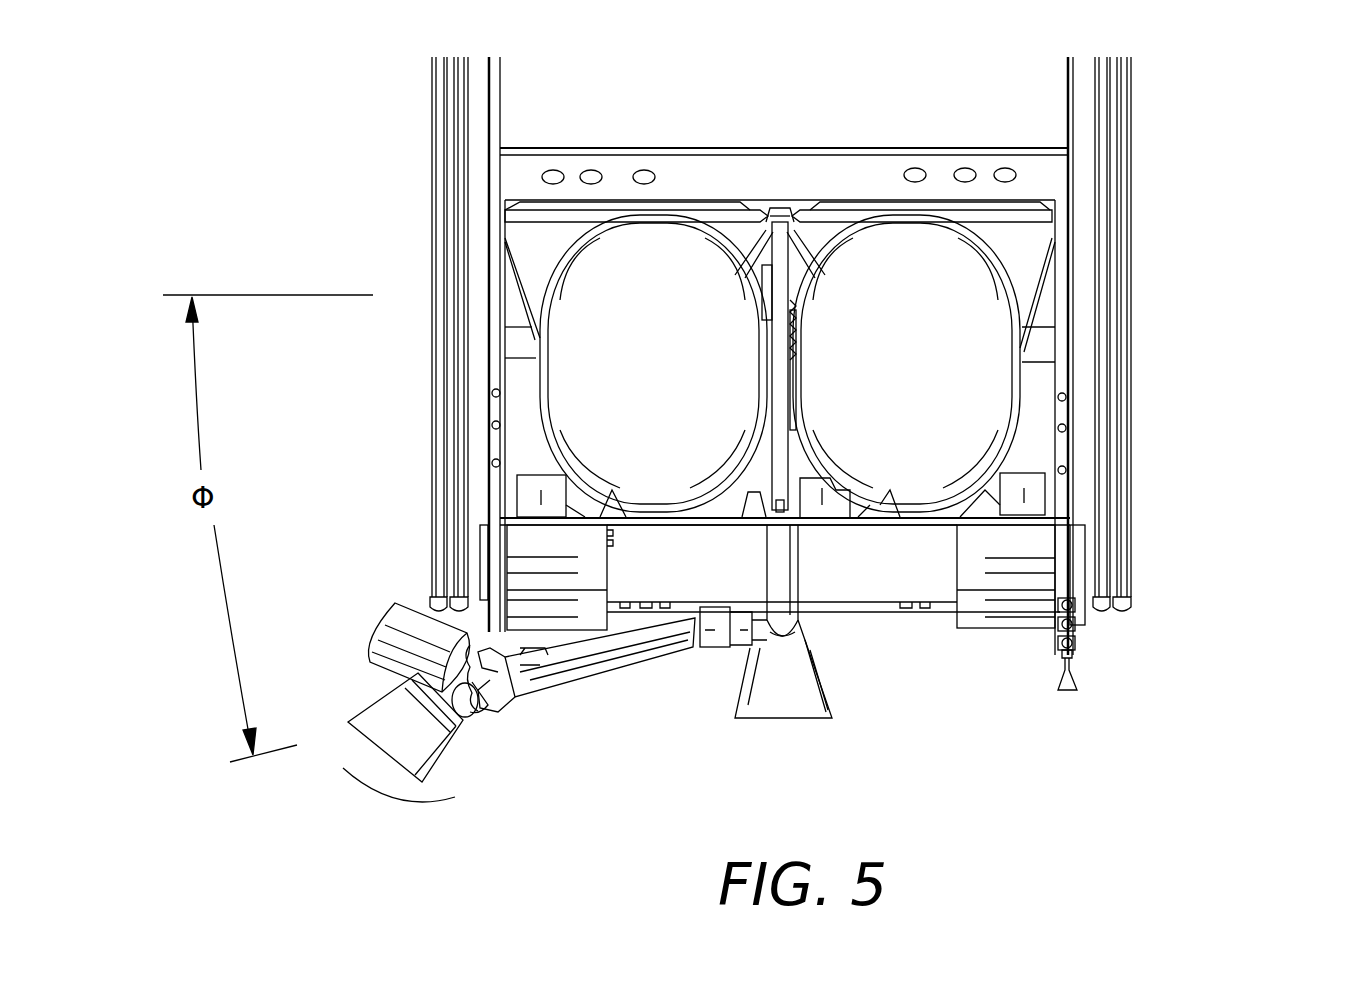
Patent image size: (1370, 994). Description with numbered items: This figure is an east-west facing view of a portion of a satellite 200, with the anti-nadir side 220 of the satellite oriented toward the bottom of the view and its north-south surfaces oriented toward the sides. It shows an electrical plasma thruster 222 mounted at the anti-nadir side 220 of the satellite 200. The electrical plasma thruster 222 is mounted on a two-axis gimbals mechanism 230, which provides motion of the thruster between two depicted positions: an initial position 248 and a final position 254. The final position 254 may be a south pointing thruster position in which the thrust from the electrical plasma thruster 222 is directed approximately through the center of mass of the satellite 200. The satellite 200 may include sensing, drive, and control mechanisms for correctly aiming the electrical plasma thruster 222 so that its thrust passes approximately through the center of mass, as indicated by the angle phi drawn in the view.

The satellite 200 is at (1230, 100).
The anti-nadir side 220 is at (897, 652).
The electrical plasma thruster 222 is at (365, 748).
The two-axis gimbals mechanism 230 is at (488, 702).
The initial position 248 is at (365, 663).
The final position 254 is at (440, 765).